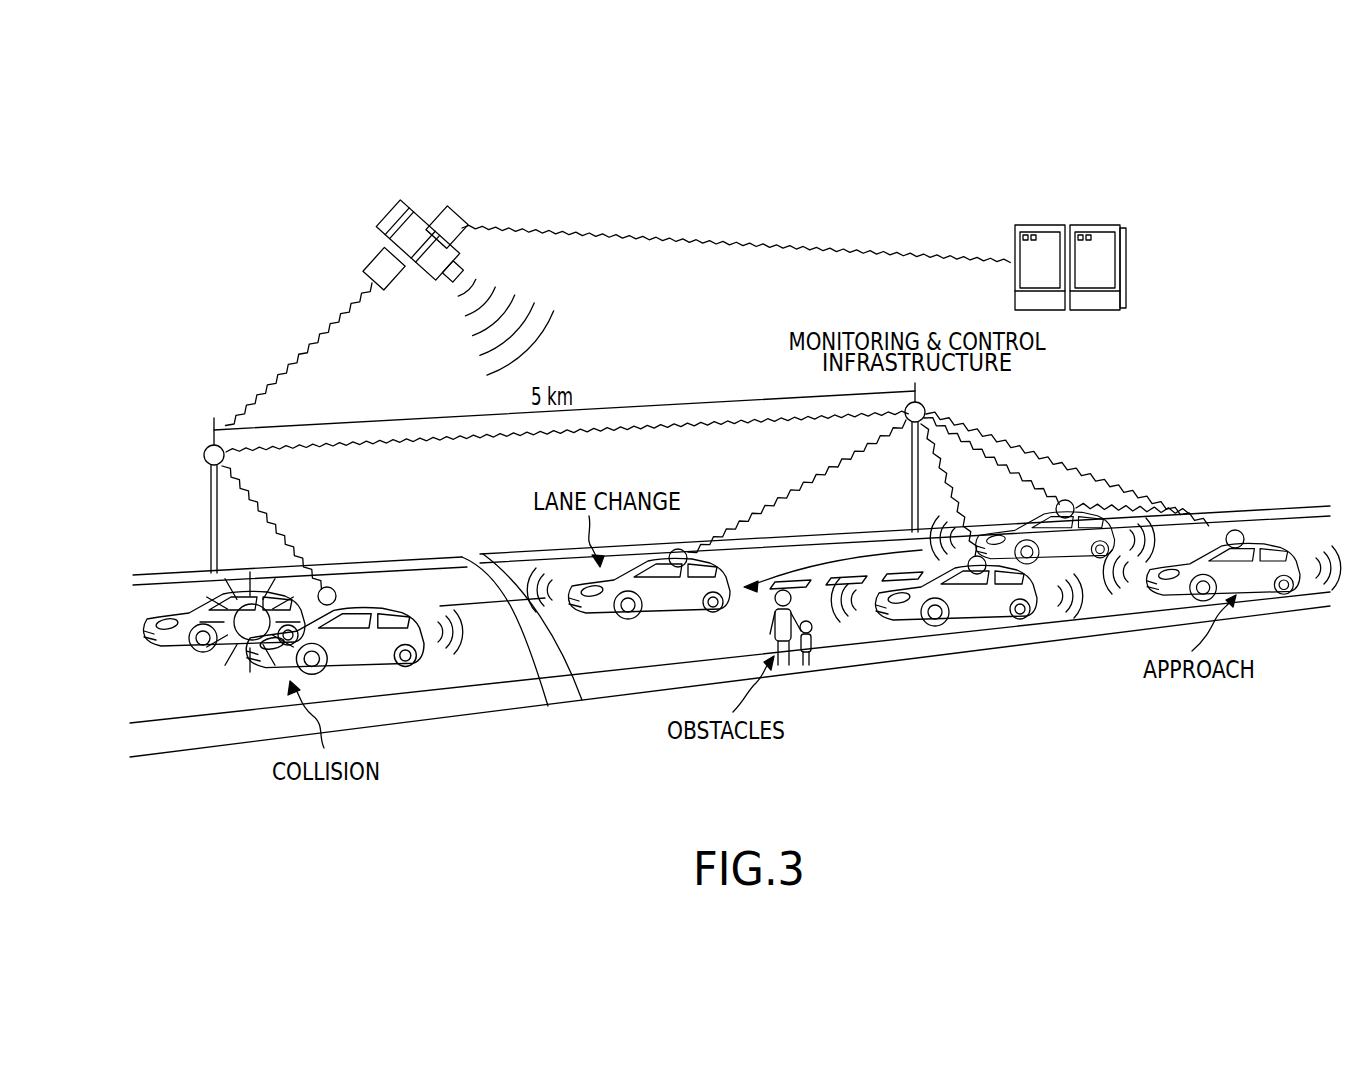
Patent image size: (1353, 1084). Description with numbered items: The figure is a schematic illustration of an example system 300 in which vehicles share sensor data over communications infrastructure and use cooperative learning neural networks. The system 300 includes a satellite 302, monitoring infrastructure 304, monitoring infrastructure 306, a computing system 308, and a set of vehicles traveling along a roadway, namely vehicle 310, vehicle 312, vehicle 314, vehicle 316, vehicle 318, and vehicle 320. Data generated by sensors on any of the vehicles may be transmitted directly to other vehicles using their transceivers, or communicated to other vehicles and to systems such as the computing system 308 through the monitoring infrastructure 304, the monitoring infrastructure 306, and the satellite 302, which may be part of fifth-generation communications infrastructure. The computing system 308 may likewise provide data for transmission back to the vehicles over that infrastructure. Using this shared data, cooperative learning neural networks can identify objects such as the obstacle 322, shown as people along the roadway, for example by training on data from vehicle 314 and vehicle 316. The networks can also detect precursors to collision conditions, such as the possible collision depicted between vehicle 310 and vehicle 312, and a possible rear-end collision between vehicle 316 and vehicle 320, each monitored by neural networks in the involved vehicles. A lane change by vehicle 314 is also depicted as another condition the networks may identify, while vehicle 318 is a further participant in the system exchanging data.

The system 300 is at (1191, 184).
The satellite 302 is at (388, 231).
The monitoring infrastructure 304 is at (204, 455).
The monitoring infrastructure 306 is at (925, 412).
The computing system 308 is at (1042, 228).
The vehicle 310 is at (145, 624).
The vehicle 312 is at (407, 660).
The vehicle 314 is at (590, 617).
The vehicle 316 is at (962, 622).
The vehicle 318 is at (1073, 500).
The vehicle 320 is at (1268, 583).
The obstacle 322 is at (806, 665).